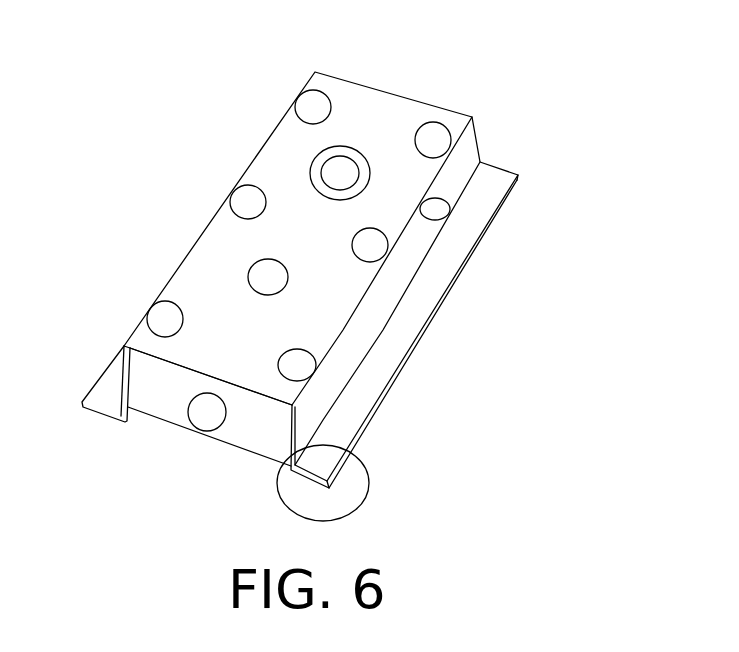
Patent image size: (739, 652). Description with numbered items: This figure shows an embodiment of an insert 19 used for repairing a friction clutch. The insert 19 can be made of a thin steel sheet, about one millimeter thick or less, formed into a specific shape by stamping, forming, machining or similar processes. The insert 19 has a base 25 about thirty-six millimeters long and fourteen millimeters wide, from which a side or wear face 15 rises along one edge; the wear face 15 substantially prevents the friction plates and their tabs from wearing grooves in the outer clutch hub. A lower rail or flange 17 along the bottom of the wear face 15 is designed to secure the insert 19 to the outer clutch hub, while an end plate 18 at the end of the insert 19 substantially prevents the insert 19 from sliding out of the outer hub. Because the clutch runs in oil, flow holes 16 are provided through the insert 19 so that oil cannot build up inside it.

The wear face 15 is at (430, 319).
The flow hole 16 is at (314, 162).
The lower rail 17 is at (369, 475).
The end plate 18 is at (195, 430).
The insert 19 is at (331, 272).
The base 25 is at (235, 248).